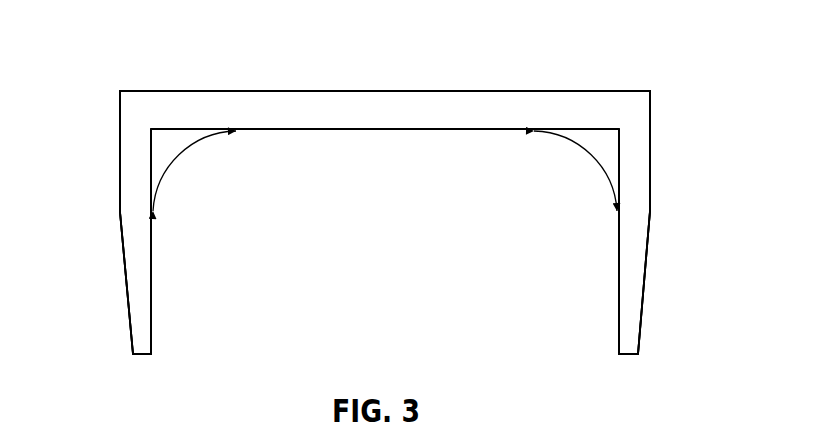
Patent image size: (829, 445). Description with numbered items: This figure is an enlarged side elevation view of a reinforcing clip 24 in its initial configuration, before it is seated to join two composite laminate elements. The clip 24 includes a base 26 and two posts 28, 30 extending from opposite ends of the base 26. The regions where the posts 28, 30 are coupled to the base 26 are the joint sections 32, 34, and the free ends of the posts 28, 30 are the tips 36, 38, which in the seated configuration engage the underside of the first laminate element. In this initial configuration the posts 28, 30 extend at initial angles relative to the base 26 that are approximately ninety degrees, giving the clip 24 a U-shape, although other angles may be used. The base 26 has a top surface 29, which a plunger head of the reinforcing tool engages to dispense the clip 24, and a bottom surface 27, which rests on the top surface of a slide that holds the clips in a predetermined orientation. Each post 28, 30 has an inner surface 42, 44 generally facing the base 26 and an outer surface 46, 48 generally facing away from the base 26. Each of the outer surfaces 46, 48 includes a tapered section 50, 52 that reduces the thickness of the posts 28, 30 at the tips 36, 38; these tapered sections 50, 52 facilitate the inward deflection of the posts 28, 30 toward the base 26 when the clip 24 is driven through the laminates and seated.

The reinforcing clip 24 is at (580, 61).
The base 26 is at (345, 111).
The bottom surface 27 is at (436, 131).
The post 28 is at (126, 216).
The top surface 29 is at (450, 91).
The post 30 is at (636, 196).
The joint section 32 is at (140, 110).
The joint section 34 is at (638, 107).
The tip 36 is at (143, 356).
The tip 38 is at (628, 356).
The inner surface 42 is at (153, 258).
The inner surface 44 is at (618, 280).
The outer surface 46 is at (119, 172).
The outer surface 48 is at (651, 148).
The tapered section 50 is at (127, 293).
The tapered section 52 is at (644, 285).